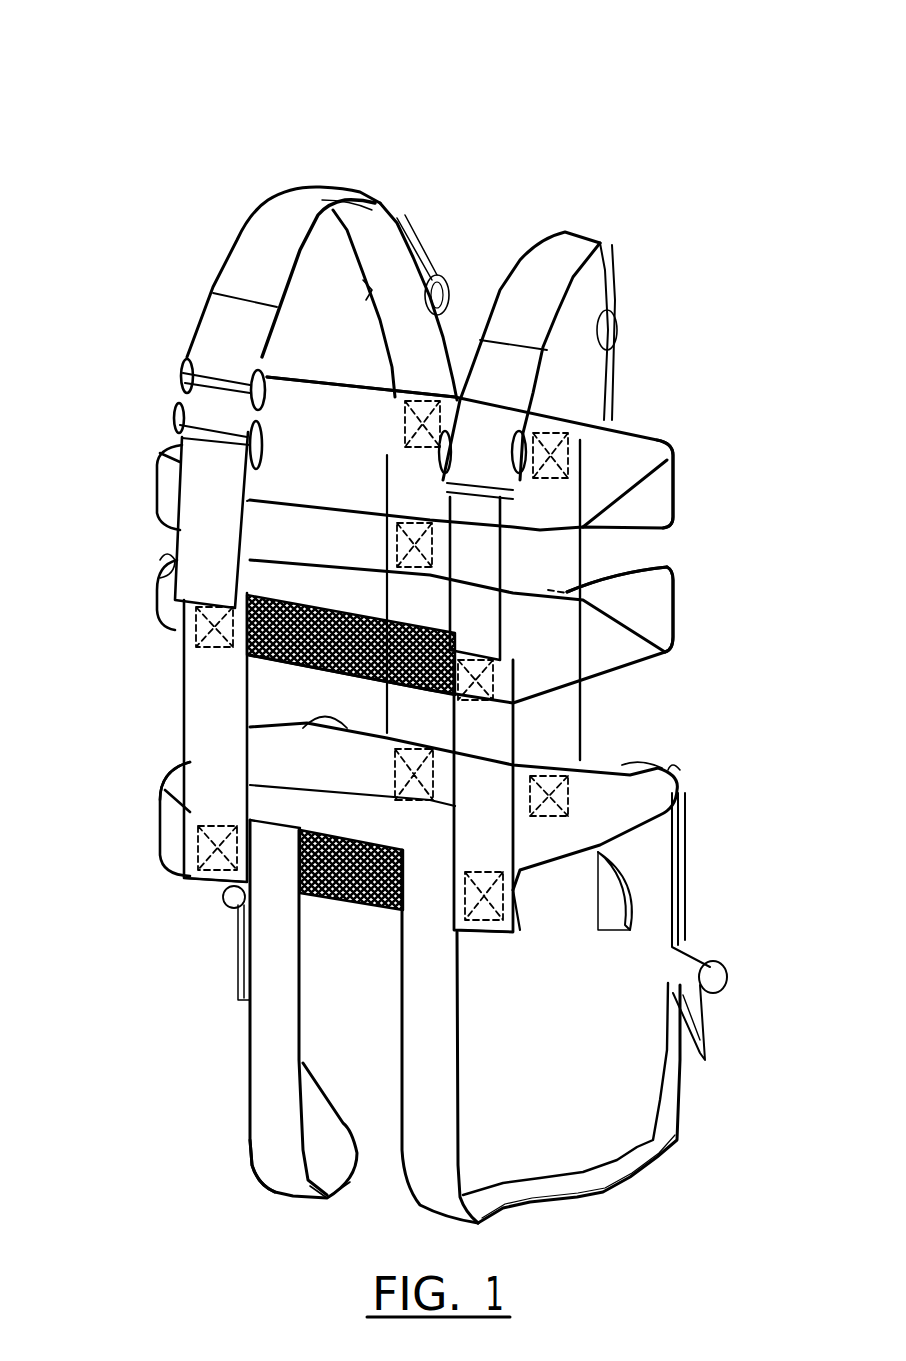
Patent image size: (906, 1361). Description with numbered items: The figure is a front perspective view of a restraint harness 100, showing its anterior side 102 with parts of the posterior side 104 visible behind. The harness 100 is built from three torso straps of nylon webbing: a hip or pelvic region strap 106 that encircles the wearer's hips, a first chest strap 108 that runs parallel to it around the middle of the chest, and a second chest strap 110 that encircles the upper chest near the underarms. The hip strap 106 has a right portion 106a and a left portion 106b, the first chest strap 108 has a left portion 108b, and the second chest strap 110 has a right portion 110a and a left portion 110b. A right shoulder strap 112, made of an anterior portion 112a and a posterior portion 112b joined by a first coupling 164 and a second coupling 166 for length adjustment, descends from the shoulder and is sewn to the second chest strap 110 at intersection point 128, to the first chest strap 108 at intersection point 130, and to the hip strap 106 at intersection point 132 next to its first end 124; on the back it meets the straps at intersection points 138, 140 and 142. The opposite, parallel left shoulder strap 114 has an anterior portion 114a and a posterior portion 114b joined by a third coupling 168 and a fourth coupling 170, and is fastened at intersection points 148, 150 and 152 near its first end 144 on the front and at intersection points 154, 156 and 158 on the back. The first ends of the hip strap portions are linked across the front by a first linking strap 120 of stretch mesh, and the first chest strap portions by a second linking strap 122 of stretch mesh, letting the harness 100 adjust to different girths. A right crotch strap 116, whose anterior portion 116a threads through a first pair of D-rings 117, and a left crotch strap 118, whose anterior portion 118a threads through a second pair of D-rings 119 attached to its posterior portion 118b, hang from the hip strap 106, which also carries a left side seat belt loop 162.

The harness 100 is at (243, 30).
The anterior side 102 is at (188, 700).
The posterior side 104 is at (600, 365).
The hip or pelvic region strap 106 is at (183, 853).
The right portion of hip or pelvic region strap 106a is at (160, 790).
The left portion of hip or pelvic region strap 106b is at (530, 935).
The first chest strap 108 is at (157, 565).
The left portion of first chest strap 108b is at (668, 652).
The second chest strap 110 is at (157, 450).
The right portion of second chest strap 110a is at (300, 378).
The left portion of second chest strap 110b is at (676, 522).
The right shoulder strap 112 is at (320, 190).
The anterior portion of right shoulder strap 112a is at (188, 745).
The posterior portion of right shoulder strap 112b is at (395, 200).
The left shoulder strap 114 is at (555, 235).
The anterior portion of left shoulder strap 114a is at (520, 733).
The posterior portion of left shoulder strap 114b is at (612, 265).
The right crotch strap 116 is at (250, 1110).
The anterior portion of right crotch strap 116a is at (255, 1147).
The first pair of D-rings 117 is at (217, 950).
The left crotch strap 118 is at (460, 1110).
The anterior portion of left crotch strap 118a is at (640, 1170).
The posterior portion of left crotch strap 118b is at (695, 895).
The second pair of D-rings 119 is at (705, 1010).
The first linking strap 120 is at (363, 907).
The second linking strap 122 is at (335, 680).
The first end of right shoulder strap 124 is at (197, 873).
The intersection point 128 is at (250, 505).
The intersection point 130 is at (196, 623).
The intersection point 132 is at (217, 867).
The intersection point 138 is at (403, 426).
The intersection point 140 is at (397, 548).
The intersection point 142 is at (397, 768).
The first end of left shoulder strap 144 is at (465, 945).
The intersection point 148 is at (516, 586).
The intersection point 150 is at (495, 678).
The intersection point 152 is at (503, 896).
The intersection point 154 is at (570, 452).
The intersection point 156 is at (673, 605).
The intersection point 158 is at (568, 793).
The left side seat belt loop 162 is at (625, 925).
The first coupling 164 is at (185, 360).
The second coupling 166 is at (180, 420).
The third coupling 168 is at (590, 410).
The fourth coupling 170 is at (560, 488).